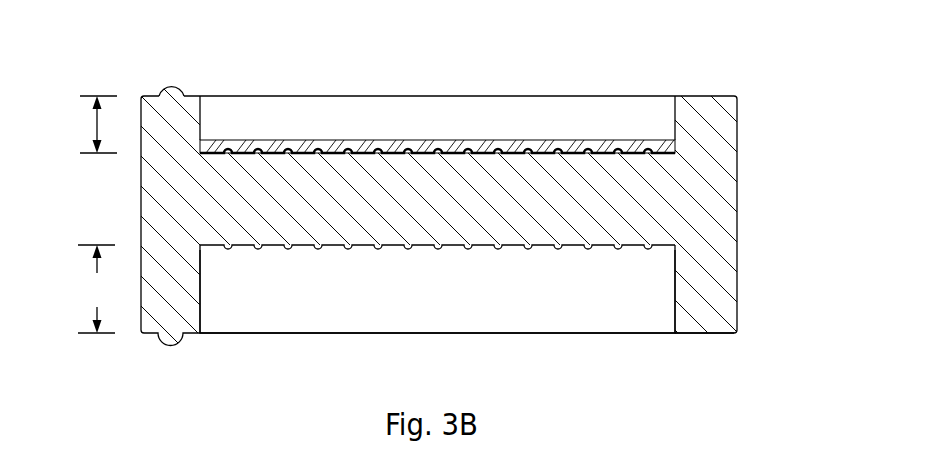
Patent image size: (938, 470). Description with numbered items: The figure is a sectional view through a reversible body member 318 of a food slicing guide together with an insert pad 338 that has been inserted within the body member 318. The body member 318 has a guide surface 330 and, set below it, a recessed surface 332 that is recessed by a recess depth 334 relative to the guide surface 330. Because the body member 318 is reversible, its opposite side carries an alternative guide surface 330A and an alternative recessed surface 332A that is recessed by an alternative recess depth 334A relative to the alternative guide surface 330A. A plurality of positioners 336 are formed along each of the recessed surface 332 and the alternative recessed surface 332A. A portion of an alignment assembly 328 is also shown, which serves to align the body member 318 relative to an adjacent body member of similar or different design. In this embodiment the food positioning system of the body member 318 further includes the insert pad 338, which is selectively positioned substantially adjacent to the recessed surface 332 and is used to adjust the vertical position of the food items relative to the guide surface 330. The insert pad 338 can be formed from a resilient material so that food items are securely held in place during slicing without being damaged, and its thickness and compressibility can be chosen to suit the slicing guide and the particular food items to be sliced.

The body member 318 is at (754, 76).
The alignment assembly 328 is at (155, 73).
The guide surface 330 is at (697, 96).
The alternative guide surface 330A is at (713, 335).
The recessed surface 332 is at (537, 151).
The alternative recessed surface 332A is at (393, 248).
The recess depth 334 is at (93, 128).
The alternative recess depth 334A is at (98, 289).
The positioners 336 is at (527, 248).
The insert pad 338 is at (420, 147).